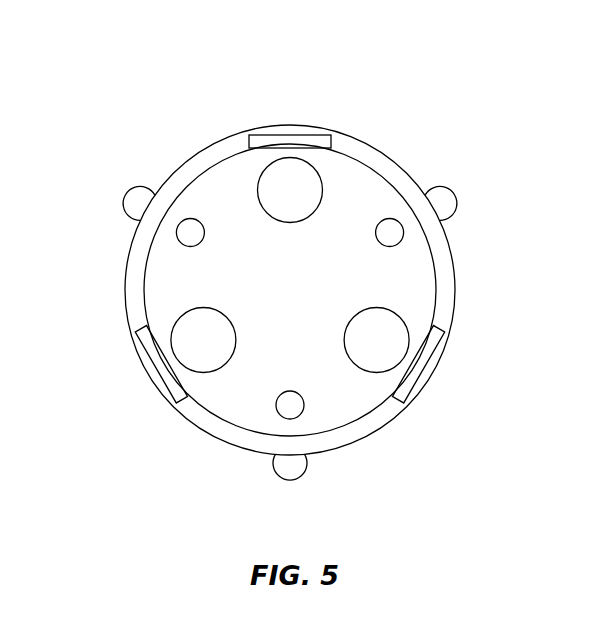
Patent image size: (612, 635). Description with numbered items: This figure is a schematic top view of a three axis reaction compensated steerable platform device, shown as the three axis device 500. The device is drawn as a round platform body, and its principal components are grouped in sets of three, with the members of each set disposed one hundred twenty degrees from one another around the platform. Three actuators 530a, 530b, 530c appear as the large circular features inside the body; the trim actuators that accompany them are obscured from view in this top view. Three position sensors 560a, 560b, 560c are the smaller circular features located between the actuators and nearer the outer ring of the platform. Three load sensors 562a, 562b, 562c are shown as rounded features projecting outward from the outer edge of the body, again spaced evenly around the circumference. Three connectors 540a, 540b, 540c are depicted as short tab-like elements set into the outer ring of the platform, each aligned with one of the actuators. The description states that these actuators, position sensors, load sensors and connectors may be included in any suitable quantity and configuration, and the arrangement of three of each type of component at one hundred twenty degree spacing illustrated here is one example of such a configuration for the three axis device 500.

The three axis device 500 is at (187, 56).
The actuator 530a is at (319, 170).
The actuator 530b is at (378, 373).
The actuator 530c is at (175, 321).
The connector 540a is at (289, 134).
The connector 540b is at (422, 372).
The connector 540c is at (150, 367).
The position sensor 560a is at (404, 236).
The position sensor 560b is at (281, 418).
The position sensor 560c is at (189, 218).
The load sensor 562a is at (457, 205).
The load sensor 562b is at (293, 480).
The load sensor 562c is at (124, 205).